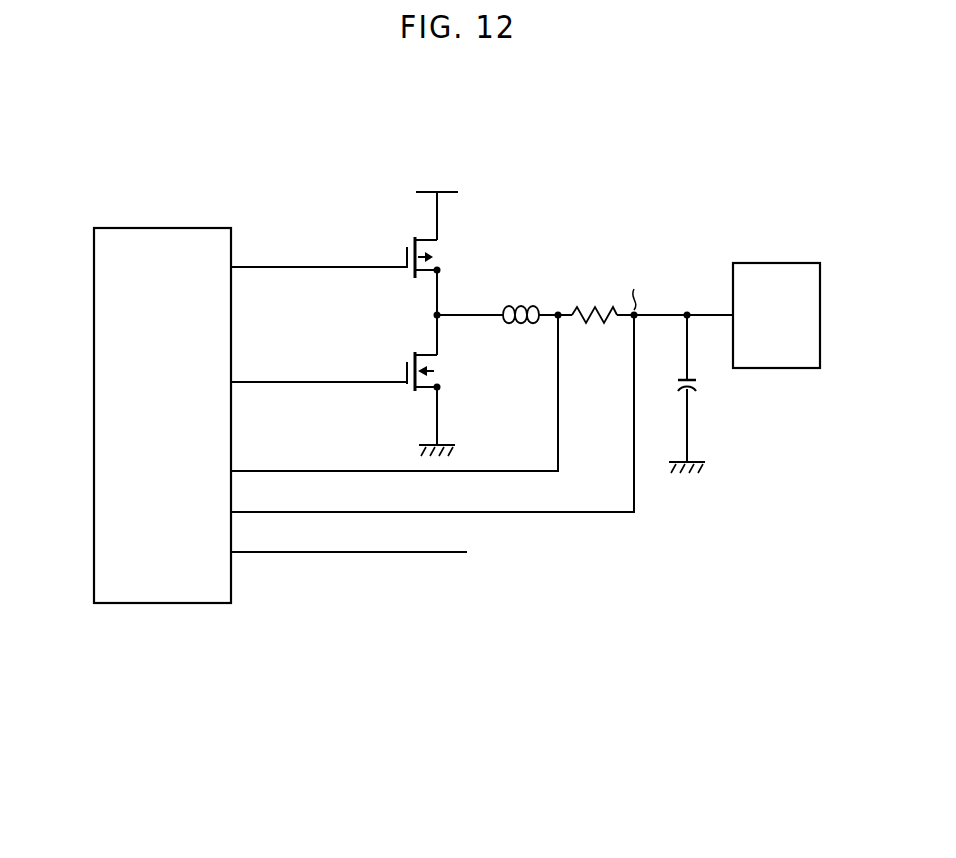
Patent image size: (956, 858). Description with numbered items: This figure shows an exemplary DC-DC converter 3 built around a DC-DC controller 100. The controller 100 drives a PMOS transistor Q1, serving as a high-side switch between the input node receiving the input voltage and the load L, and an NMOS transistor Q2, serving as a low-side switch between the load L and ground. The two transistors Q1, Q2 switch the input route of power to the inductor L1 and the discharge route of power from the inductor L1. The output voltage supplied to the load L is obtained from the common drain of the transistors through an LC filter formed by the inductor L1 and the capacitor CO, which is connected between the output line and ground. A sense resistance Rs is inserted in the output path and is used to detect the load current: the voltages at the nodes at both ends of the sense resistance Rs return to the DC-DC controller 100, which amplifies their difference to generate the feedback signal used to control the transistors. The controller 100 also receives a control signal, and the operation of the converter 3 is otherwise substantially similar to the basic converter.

The DC-DC converter 3 is at (455, 660).
The DC-DC controller 100 is at (164, 228).
The PMOS transistor Q1 is at (441, 252).
The NMOS transistor Q2 is at (441, 370).
The inductor L1 is at (524, 306).
The sense resistance Rs is at (590, 306).
The capacitor CO is at (691, 394).
The load L is at (779, 262).